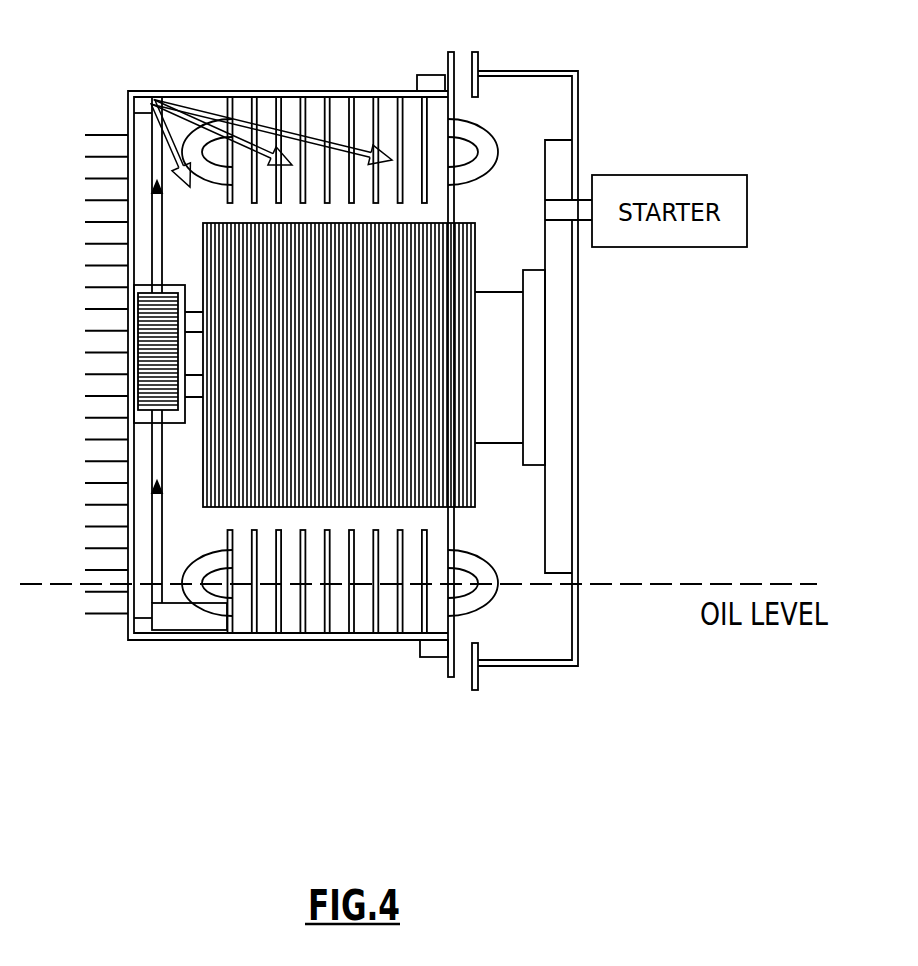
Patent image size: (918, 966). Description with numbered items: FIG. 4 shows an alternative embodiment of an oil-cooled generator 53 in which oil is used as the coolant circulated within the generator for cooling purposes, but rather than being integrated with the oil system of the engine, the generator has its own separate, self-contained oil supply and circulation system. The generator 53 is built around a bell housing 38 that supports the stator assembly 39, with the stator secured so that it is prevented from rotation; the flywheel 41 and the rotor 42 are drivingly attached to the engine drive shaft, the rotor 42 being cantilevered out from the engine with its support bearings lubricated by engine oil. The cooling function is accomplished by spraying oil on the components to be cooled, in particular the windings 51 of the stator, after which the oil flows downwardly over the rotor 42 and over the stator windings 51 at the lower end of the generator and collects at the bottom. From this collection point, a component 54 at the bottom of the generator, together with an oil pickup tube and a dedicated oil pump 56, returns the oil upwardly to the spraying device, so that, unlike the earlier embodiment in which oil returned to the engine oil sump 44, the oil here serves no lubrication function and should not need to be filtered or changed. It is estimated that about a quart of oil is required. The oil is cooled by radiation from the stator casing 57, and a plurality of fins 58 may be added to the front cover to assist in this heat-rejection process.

The bell housing 38 is at (515, 71).
The stator assembly 39 is at (295, 91).
The flywheel 41 is at (562, 553).
The rotor 42 is at (230, 468).
The engine oil sump 44 is at (128, 101).
The stator windings 51 is at (250, 202).
The generator 53 is at (128, 122).
The oil pump 54 is at (177, 622).
The oil pump 56 is at (130, 407).
The stator casing 57 is at (336, 652).
The fins 58 is at (93, 197).